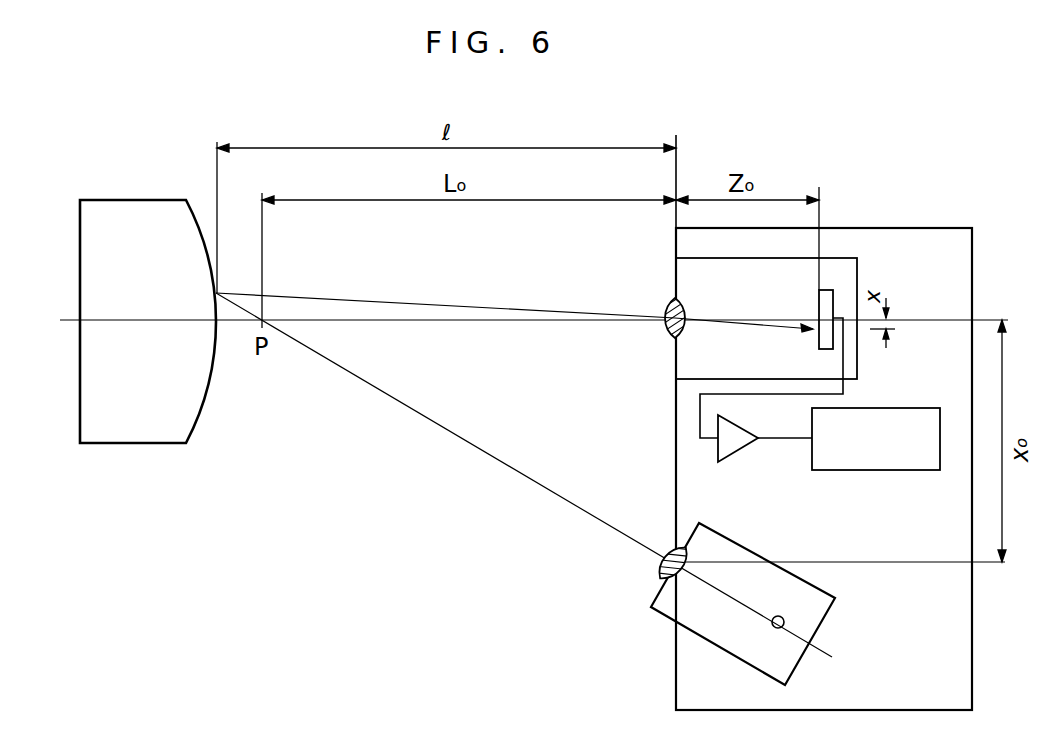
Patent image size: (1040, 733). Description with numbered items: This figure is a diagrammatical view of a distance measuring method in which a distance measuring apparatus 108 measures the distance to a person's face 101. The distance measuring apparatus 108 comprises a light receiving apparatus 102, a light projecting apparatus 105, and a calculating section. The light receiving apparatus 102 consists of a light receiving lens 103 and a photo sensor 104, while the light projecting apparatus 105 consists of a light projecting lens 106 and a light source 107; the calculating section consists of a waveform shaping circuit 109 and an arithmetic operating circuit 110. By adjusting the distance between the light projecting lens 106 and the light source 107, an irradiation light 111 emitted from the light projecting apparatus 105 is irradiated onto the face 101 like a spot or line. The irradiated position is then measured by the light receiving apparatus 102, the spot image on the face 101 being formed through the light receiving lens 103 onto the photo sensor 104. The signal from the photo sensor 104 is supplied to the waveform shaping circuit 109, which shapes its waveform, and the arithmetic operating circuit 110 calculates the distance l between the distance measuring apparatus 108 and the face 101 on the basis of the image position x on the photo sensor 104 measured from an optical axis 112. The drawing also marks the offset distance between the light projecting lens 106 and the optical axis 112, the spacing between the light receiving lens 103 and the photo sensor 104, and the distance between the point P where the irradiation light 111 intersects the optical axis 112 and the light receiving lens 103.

The person's face 101 is at (130, 200).
The light receiving apparatus 102 is at (699, 258).
The light receiving lens 103 is at (664, 327).
The photo sensor 104 is at (819, 345).
The light projecting apparatus 105 is at (760, 556).
The light projecting lens 106 is at (660, 571).
The light source 107 is at (785, 623).
The distance measuring apparatus 108 is at (877, 228).
The waveform shaping circuit 109 is at (728, 459).
The arithmetic operating circuit 110 is at (840, 470).
The irradiation light 111 is at (430, 420).
The optical axis 112 is at (395, 322).